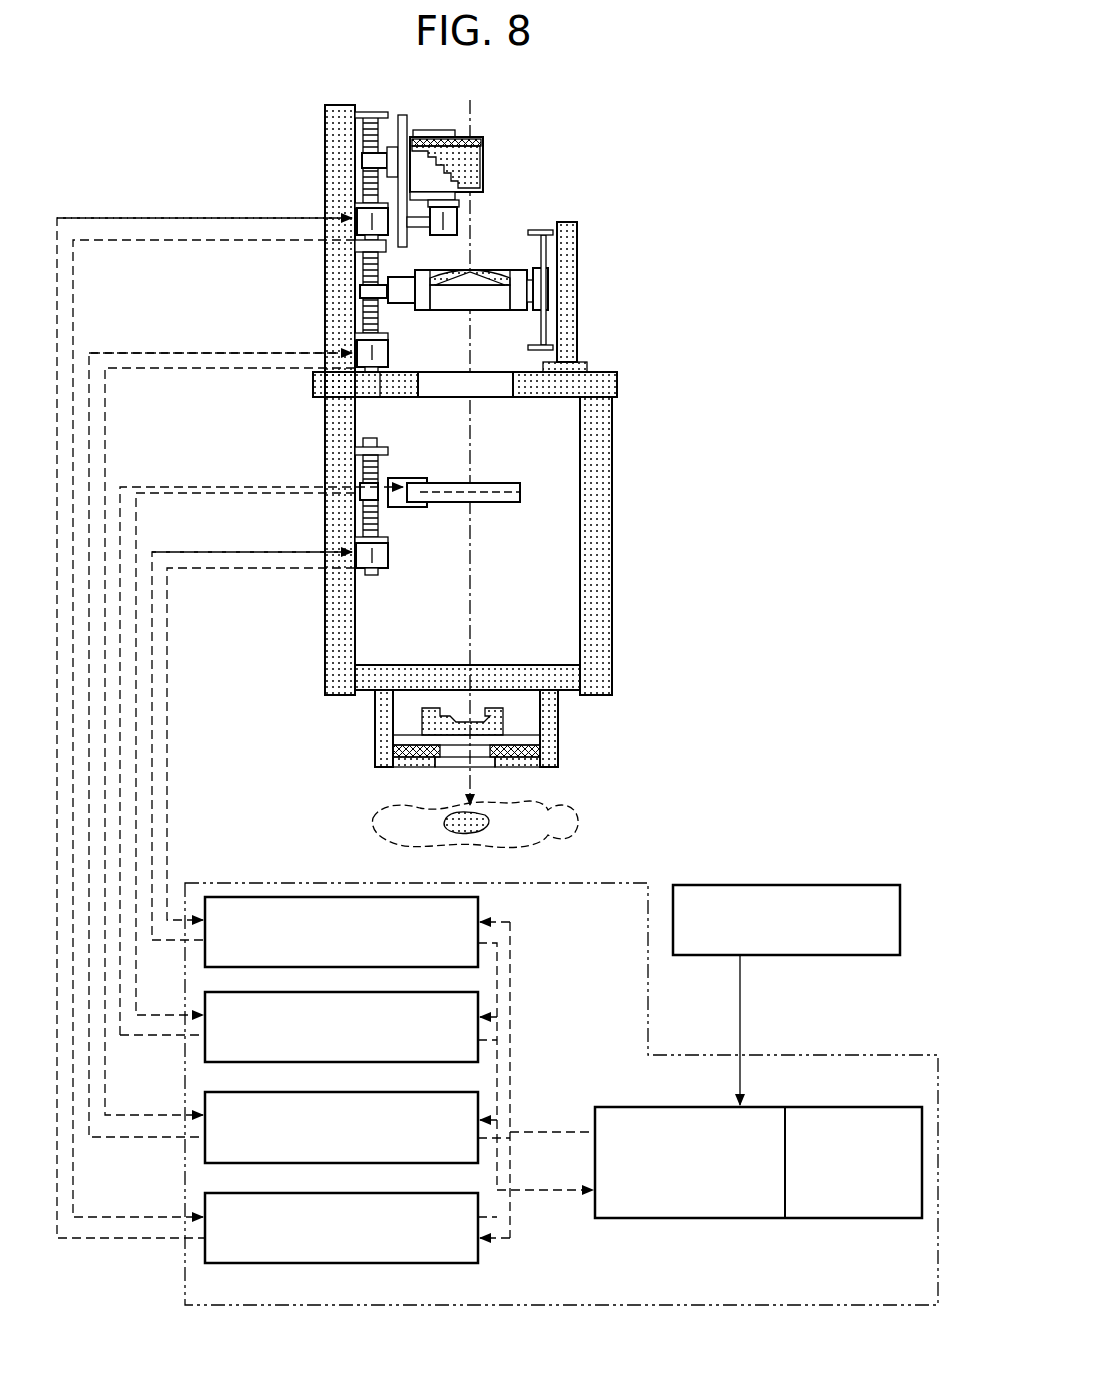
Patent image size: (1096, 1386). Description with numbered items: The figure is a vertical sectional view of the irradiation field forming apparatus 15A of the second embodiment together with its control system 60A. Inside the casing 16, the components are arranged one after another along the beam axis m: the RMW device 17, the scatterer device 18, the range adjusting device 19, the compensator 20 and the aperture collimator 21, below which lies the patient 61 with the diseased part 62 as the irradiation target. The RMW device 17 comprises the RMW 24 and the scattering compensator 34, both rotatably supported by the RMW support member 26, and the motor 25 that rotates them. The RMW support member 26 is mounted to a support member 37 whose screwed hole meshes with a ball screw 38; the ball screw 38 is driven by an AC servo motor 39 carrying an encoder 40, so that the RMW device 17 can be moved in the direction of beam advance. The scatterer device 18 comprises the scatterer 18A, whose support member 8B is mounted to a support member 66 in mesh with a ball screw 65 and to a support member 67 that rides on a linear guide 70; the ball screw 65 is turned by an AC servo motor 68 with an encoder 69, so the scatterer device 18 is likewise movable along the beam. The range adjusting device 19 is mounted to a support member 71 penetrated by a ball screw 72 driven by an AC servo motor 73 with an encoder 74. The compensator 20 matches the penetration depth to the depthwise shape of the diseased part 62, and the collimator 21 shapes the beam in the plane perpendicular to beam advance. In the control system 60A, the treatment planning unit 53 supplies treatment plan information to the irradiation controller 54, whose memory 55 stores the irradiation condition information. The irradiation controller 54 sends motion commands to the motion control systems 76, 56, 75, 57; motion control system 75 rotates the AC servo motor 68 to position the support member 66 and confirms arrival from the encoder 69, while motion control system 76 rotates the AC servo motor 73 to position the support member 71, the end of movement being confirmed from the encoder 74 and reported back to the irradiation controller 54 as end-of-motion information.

The irradiation field forming apparatus 15A is at (612, 190).
The beam axis m is at (478, 108).
The casing 16 is at (340, 105).
The RMW support member 26 is at (402, 115).
The ball screw 38 is at (363, 135).
The support member 37 is at (362, 160).
The AC servo motor 39 is at (352, 220).
The encoder 40 is at (356, 246).
The range modulation wheel device 17 is at (497, 160).
The scattering compensator 34 is at (485, 142).
The range modulation wheel 24 is at (483, 186).
The motor 25 is at (457, 218).
The scatterer device 18 is at (527, 256).
The scatterer 18A is at (492, 284).
The support block 8B is at (400, 302).
The support member 66 is at (360, 292).
The ball screw 65 is at (363, 318).
The AC servo motor 68 is at (355, 352).
The support member 67 is at (548, 290).
The linear guide 70 is at (567, 338).
The encoder 69 is at (377, 372).
The ball screw 72 is at (362, 467).
The support member 71 is at (358, 484).
The range adjusting device 19 is at (518, 470).
The AC servo motor 73 is at (390, 548).
The encoder 74 is at (372, 575).
The compensator 20 is at (503, 728).
The aperture collimator 21 is at (558, 757).
The diseased part 62 is at (487, 820).
The patient 61 is at (580, 823).
The control system 60A is at (686, 1055).
The motion control system 76 is at (253, 897).
The motion control system 56 is at (215, 1062).
The motion control system 75 is at (215, 1163).
The motion control system 57 is at (362, 1263).
The irradiation controller 54 is at (755, 1218).
The memory 55 is at (870, 1218).
The treatment planning unit 53 is at (820, 885).